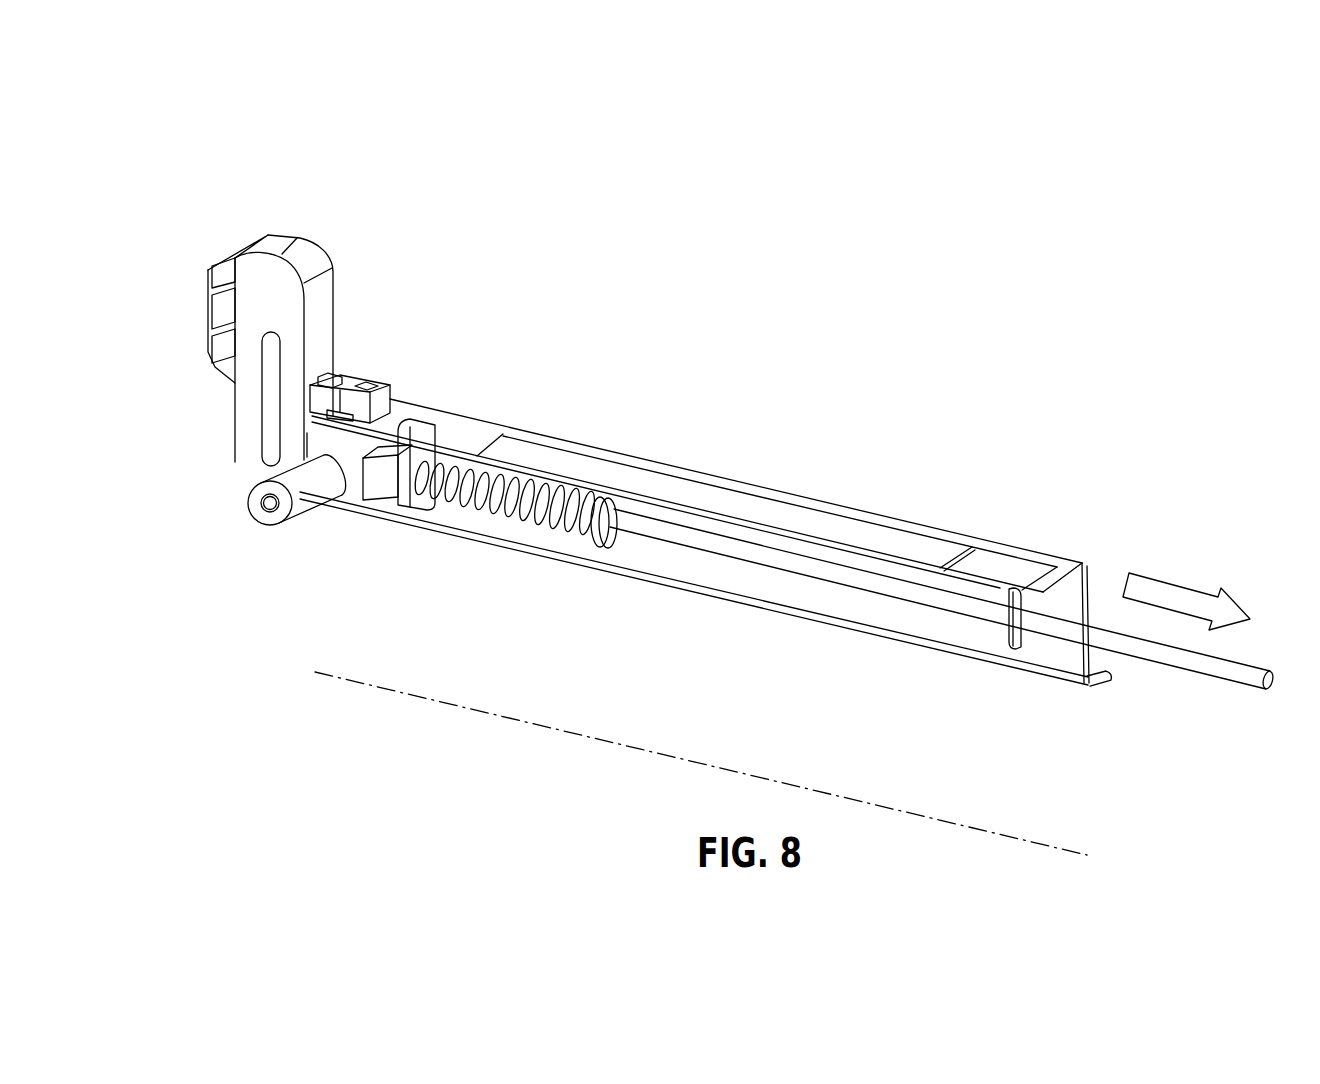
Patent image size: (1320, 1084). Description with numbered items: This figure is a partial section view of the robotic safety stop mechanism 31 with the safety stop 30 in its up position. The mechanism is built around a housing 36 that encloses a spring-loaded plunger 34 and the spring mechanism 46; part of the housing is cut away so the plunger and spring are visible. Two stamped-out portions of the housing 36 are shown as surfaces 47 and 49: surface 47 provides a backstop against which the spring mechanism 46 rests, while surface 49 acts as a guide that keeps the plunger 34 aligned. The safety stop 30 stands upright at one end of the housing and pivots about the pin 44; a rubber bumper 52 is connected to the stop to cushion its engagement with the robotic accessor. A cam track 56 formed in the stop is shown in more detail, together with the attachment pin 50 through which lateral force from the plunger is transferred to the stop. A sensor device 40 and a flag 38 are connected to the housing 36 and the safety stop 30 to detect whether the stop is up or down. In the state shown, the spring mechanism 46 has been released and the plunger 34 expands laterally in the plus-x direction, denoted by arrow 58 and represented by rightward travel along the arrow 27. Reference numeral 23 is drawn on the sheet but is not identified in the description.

The holder 23 is at (258, 222).
The safety stop 30 is at (330, 262).
The flag 38 is at (330, 377).
The sensor device 40 is at (372, 390).
The rubber bumper 52 is at (212, 290).
The cam track 56 is at (270, 397).
The attachment pin 50 is at (270, 453).
The pin 44 is at (270, 505).
The surface 47 is at (407, 493).
The spring mechanism 46 is at (507, 508).
The housing 36 is at (620, 456).
The safety stop mechanism 31 is at (767, 446).
The arrow 58 is at (1163, 580).
The surface 49 is at (1012, 645).
The spring-loaded plunger 34 is at (1178, 670).
The arrow 27 is at (433, 700).